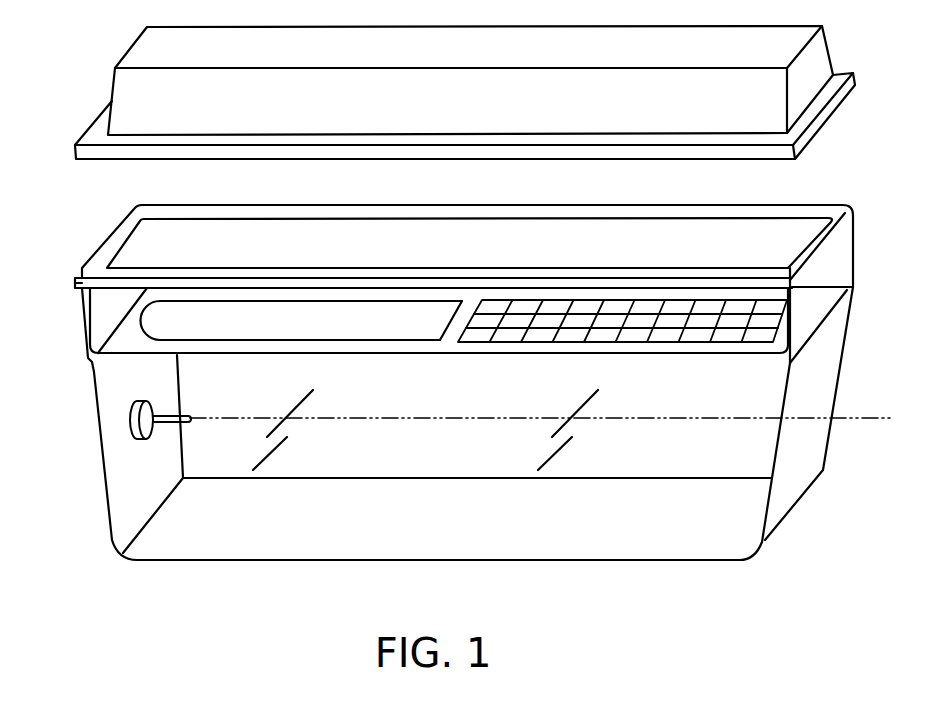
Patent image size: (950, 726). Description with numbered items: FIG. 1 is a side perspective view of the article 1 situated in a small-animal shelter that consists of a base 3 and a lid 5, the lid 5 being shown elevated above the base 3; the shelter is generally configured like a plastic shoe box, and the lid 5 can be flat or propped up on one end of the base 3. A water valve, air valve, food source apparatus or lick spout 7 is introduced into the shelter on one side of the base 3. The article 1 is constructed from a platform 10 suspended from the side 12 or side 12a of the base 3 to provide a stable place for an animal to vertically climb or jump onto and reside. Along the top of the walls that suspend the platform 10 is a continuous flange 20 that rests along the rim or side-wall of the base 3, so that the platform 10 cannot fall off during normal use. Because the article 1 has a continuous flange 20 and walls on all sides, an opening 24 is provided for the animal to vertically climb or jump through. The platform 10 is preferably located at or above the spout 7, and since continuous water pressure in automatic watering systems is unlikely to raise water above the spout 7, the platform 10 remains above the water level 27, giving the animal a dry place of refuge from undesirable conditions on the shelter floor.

The article 1 is at (633, 357).
The base 3 is at (108, 498).
The lid 5 is at (813, 65).
The lick spout 7 is at (188, 424).
The platform 10 is at (620, 328).
The side 12 is at (76, 285).
The side 12a is at (88, 362).
The continuous flange 20 is at (86, 268).
The opening 24 is at (375, 322).
The water level 27 is at (850, 420).